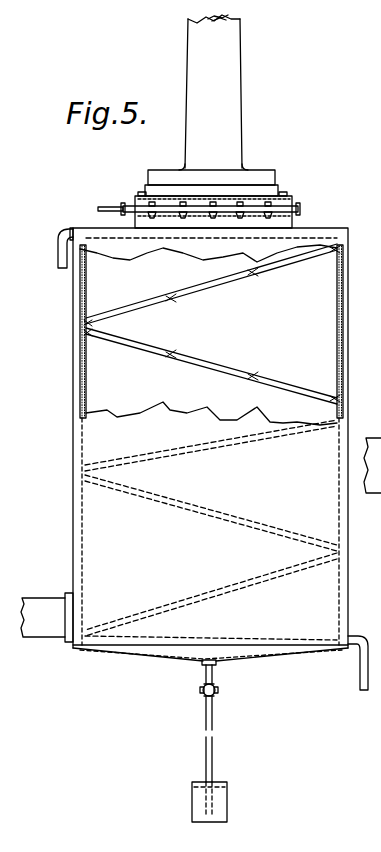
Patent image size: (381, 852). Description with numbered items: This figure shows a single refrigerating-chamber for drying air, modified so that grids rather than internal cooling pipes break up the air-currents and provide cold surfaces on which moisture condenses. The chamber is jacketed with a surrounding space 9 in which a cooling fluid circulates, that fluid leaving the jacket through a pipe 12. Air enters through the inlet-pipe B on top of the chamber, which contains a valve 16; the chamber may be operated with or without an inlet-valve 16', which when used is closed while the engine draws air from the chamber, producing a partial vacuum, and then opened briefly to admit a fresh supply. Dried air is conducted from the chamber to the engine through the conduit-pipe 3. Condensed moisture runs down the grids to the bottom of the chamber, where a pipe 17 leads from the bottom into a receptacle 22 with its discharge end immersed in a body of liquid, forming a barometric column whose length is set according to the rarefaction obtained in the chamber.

The inlet-pipe B is at (213, 92).
The inlet valve 16' is at (211, 199).
The jacket space 9 is at (355, 310).
The refrigerating fluid outlet pipe 12 is at (58, 259).
The conduit-pipe 3 is at (201, 540).
The inlet valve 16 is at (364, 663).
The water draw-off pipe 17 is at (212, 719).
The receptacle 22 is at (218, 806).